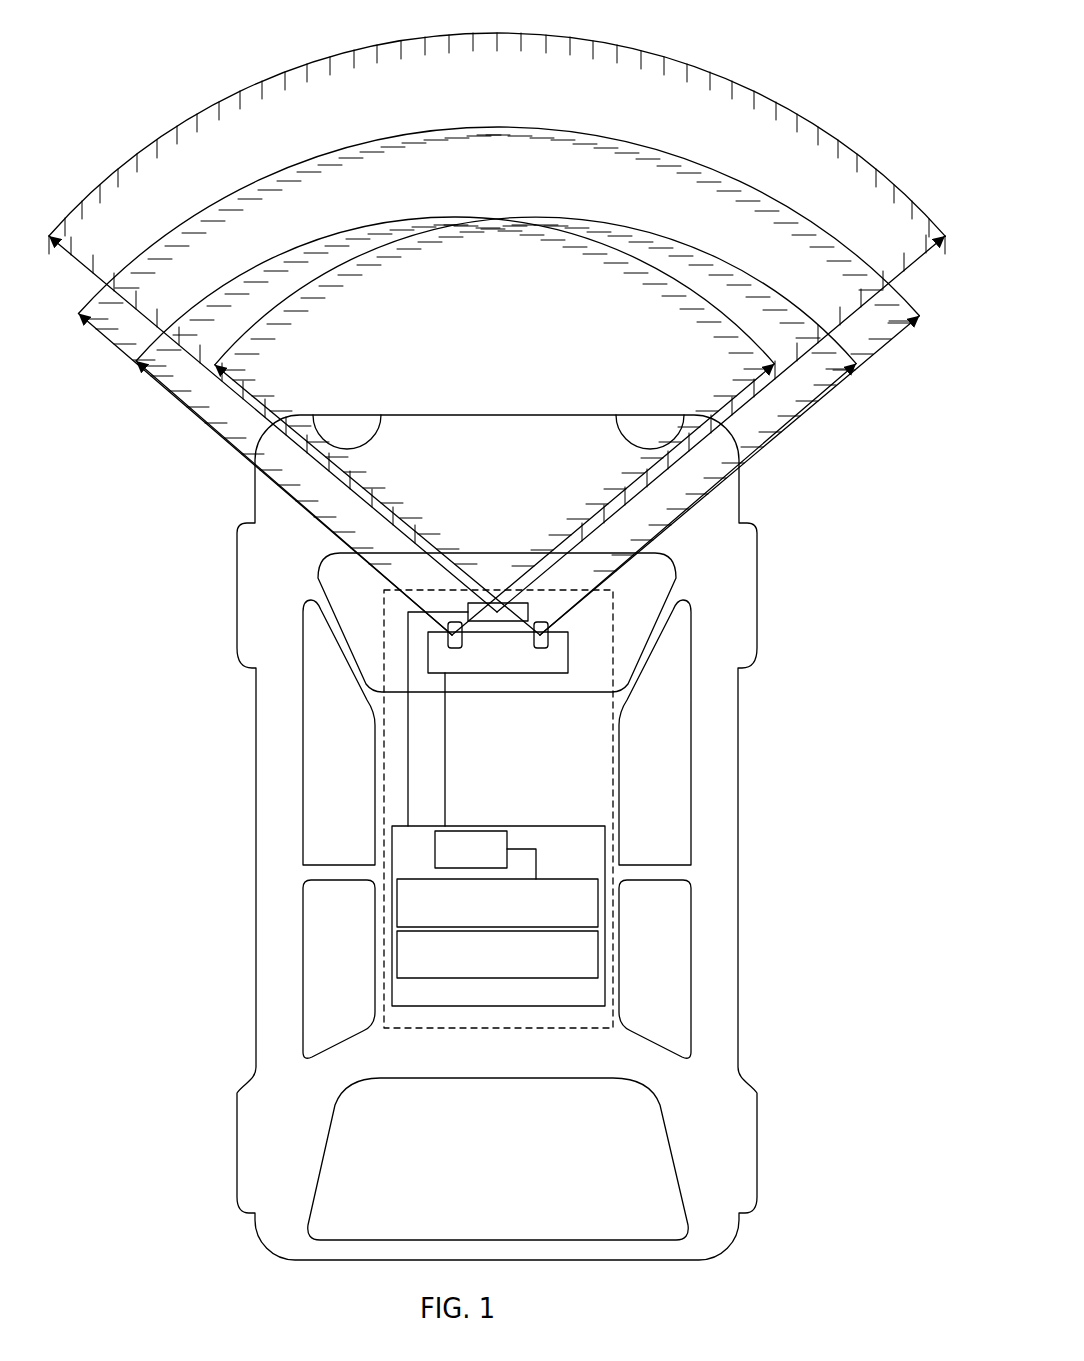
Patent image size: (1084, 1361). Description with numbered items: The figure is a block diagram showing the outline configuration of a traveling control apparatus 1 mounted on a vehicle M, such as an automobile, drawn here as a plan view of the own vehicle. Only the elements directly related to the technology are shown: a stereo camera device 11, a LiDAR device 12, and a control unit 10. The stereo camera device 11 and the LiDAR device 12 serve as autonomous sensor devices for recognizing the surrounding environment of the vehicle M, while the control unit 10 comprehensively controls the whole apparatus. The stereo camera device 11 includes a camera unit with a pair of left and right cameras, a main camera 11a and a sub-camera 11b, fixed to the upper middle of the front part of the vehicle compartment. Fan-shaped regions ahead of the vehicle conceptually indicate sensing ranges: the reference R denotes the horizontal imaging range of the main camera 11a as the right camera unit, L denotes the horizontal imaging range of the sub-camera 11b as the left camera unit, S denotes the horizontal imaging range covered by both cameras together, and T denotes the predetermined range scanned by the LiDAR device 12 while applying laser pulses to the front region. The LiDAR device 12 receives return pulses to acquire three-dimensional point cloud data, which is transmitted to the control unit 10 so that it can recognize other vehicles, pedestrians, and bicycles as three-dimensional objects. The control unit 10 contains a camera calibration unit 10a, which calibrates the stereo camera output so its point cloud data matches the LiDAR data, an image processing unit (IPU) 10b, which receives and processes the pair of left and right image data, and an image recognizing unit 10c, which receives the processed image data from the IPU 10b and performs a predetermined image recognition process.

The traveling control apparatus 1 is at (605, 590).
The control unit 10 is at (548, 1006).
The camera calibration unit 10a is at (598, 957).
The image processing unit (IPU) 10b is at (507, 838).
The image recognizing unit 10c is at (600, 878).
The stereo camera device 11 is at (428, 665).
The main camera 11a is at (462, 640).
The sub-camera 11b is at (548, 650).
The LiDAR device 12 is at (468, 610).
The vehicle M is at (272, 748).
The predetermined range T is at (497, 307).
The imaging range of the stereo camera device S is at (499, 366).
The imaging range of the sub-camera L is at (455, 426).
The imaging range of the main camera R is at (535, 424).